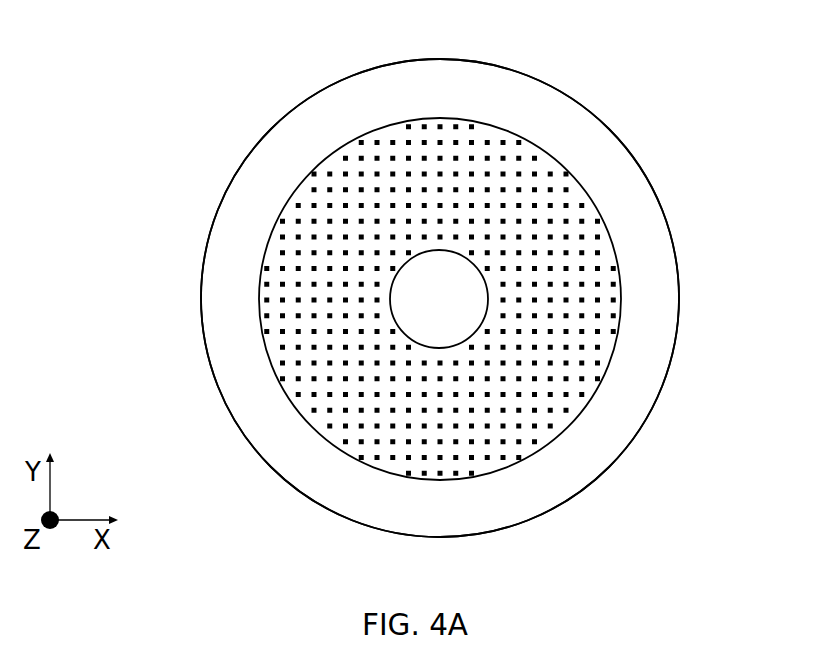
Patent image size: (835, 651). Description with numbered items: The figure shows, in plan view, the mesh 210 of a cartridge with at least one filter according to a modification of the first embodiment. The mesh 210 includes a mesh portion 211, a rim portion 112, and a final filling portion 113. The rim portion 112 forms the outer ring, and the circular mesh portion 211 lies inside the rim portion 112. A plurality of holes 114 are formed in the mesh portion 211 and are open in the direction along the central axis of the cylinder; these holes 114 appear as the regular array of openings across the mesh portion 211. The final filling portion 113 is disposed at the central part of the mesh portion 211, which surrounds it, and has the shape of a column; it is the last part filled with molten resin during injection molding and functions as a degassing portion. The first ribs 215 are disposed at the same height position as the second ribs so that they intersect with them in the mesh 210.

The mesh 210 is at (732, 61).
The rim portion 112 is at (425, 83).
The final filling portion 113 is at (407, 305).
The holes 114 is at (552, 190).
The first ribs 215 is at (262, 337).
The mesh portion 211 is at (606, 393).